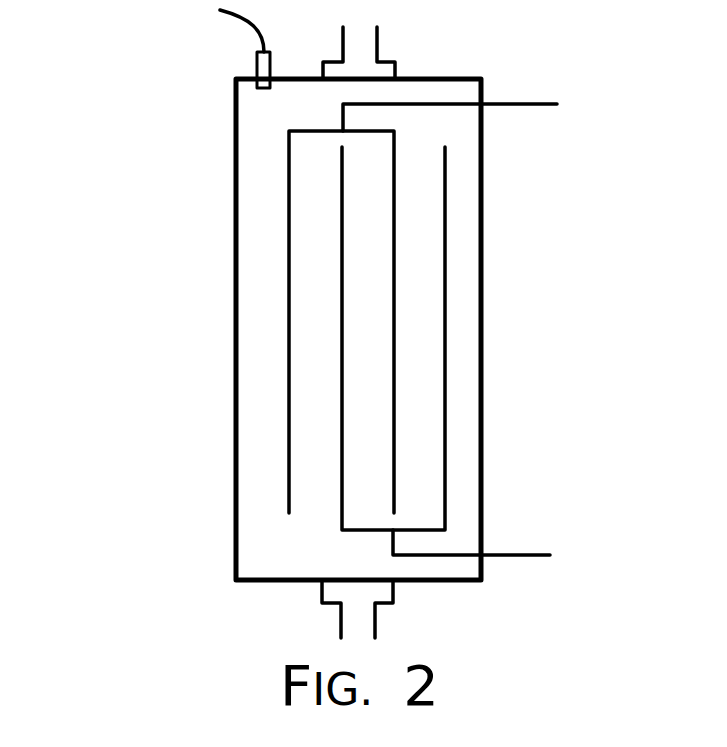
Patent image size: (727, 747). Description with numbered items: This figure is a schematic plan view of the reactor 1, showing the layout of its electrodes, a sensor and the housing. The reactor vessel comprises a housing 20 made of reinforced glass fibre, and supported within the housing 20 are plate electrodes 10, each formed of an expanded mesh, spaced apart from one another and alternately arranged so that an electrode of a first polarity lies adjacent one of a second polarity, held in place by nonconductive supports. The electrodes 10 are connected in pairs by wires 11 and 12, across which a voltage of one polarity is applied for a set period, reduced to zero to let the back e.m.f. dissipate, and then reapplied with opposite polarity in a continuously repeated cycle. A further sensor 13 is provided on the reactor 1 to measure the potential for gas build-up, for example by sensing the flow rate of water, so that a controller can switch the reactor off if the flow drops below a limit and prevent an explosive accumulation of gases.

The reactor 1 is at (158, 225).
The electrodes 10 is at (342, 318).
The wire 11 is at (520, 100).
The wire 12 is at (518, 557).
The further sensor 13 is at (257, 63).
The housing 20 is at (484, 237).